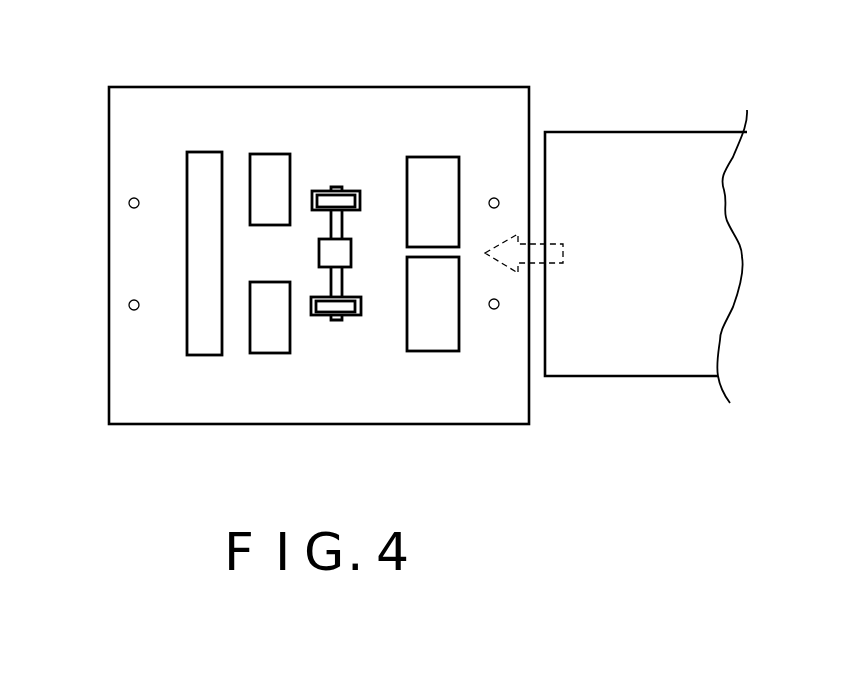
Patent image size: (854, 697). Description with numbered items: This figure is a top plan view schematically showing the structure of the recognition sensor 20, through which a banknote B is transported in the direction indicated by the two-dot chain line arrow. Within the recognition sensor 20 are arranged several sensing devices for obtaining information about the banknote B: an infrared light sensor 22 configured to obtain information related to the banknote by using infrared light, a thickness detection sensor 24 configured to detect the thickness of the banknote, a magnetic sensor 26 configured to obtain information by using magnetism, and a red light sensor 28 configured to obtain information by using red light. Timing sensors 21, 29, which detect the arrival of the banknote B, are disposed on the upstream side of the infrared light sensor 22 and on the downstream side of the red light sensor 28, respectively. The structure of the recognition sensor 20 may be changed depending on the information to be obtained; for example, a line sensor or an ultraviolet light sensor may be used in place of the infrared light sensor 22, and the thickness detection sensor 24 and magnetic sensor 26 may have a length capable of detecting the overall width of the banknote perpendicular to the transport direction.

The recognition sensor 20 is at (378, 79).
The timing sensor 21 is at (500, 203).
The infrared light sensor 22 is at (422, 222).
The thickness detection sensor 24 is at (347, 201).
The magnetic sensor 26 is at (268, 213).
The red light sensor 28 is at (203, 152).
The timing sensor 29 is at (130, 207).
The banknote B is at (640, 132).